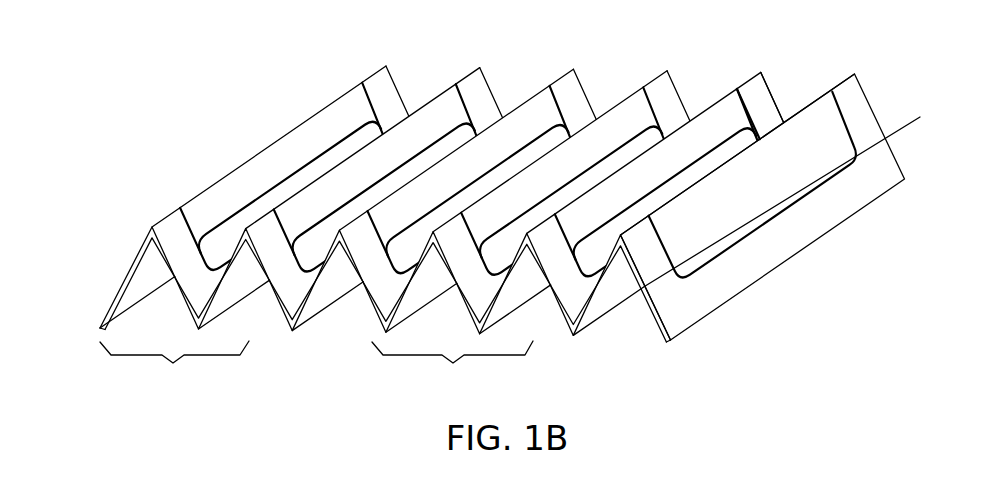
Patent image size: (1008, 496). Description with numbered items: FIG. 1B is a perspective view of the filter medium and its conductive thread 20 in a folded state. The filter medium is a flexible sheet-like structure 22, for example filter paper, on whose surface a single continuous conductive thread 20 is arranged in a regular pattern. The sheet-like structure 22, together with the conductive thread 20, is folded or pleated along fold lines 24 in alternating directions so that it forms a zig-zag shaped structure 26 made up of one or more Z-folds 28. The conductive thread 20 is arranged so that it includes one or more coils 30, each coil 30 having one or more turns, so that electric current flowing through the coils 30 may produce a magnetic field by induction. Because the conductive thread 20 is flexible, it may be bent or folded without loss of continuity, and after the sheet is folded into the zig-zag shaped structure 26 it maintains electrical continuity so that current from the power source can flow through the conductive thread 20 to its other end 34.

The conductive thread 20 is at (708, 266).
The sheet-like structure 22 is at (174, 128).
The fold lines 24 is at (814, 95).
The zig-zag shaped structure 26 is at (838, 253).
The Z-folds 28 is at (316, 369).
The coils 30 is at (716, 142).
The other end 34 is at (905, 150).